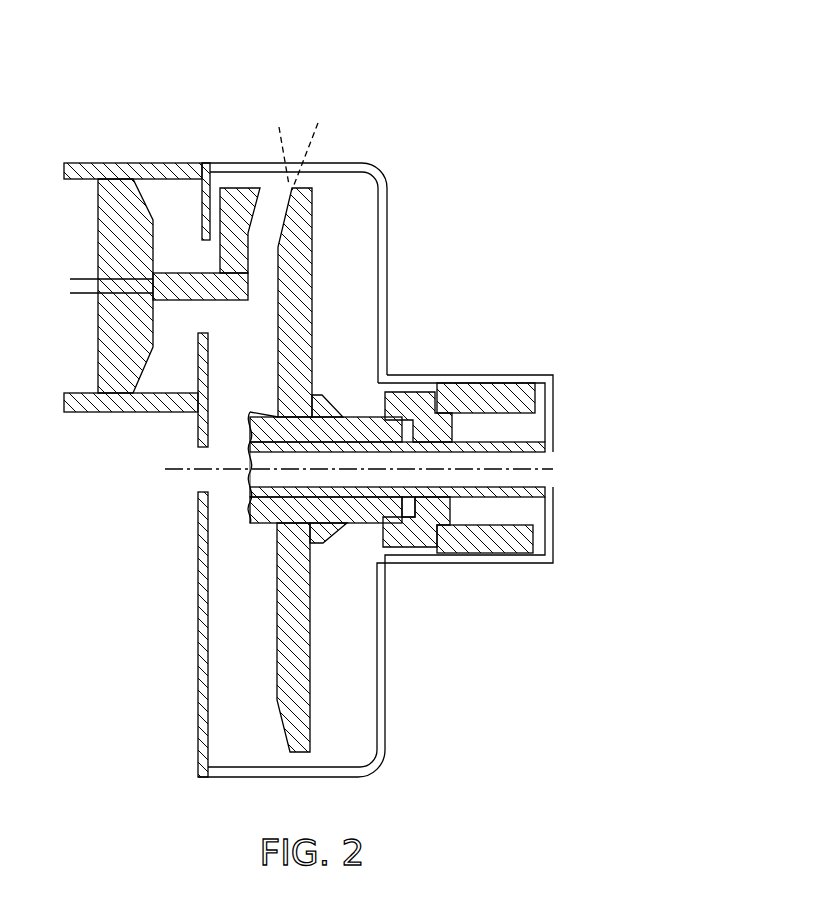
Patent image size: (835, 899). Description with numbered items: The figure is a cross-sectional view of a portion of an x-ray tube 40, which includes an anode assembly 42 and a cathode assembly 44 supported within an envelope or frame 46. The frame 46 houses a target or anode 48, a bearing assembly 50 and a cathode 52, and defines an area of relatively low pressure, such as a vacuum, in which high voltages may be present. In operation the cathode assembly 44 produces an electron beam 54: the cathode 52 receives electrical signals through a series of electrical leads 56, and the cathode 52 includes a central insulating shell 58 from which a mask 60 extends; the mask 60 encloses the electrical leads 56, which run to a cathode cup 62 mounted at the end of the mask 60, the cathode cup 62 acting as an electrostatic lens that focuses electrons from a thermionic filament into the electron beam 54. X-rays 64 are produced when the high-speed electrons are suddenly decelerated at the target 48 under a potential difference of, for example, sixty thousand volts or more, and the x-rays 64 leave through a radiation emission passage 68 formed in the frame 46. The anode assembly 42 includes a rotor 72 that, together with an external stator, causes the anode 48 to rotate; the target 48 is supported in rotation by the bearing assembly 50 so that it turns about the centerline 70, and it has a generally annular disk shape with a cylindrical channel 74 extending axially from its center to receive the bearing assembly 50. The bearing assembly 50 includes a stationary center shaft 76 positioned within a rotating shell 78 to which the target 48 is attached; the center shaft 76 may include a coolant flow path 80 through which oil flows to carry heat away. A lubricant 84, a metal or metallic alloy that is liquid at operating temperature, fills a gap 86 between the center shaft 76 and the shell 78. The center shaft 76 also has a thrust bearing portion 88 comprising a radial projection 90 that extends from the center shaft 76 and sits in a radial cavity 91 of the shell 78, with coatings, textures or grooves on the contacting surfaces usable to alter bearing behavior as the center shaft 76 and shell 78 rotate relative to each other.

The x-ray tube 40 is at (477, 51).
The anode assembly 42 is at (375, 453).
The cathode assembly 44 is at (155, 431).
The envelope or frame 46 is at (206, 778).
The target or anode 48 is at (312, 310).
The bearing assembly 50 is at (466, 512).
The cathode 52 is at (212, 244).
The electron beam 54 is at (281, 218).
The electrical leads 56 is at (77, 278).
The central insulating shell 58 is at (98, 202).
The mask 60 is at (224, 302).
The cathode cup 62 is at (246, 180).
The x-rays 64 is at (327, 141).
The radiation emission passage 68 is at (350, 166).
The centerline 70 is at (378, 432).
The rotor 72 is at (500, 383).
The cylindrical channel 74 is at (267, 411).
The center shaft 76 is at (246, 476).
The shell 78 is at (343, 540).
The coolant flow path 80 is at (558, 469).
The lubricant 84 is at (341, 410).
The gap 86 is at (333, 426).
The thrust bearing portion 88 is at (418, 530).
The radial projection 90 is at (406, 393).
The radial cavity 91 is at (408, 519).